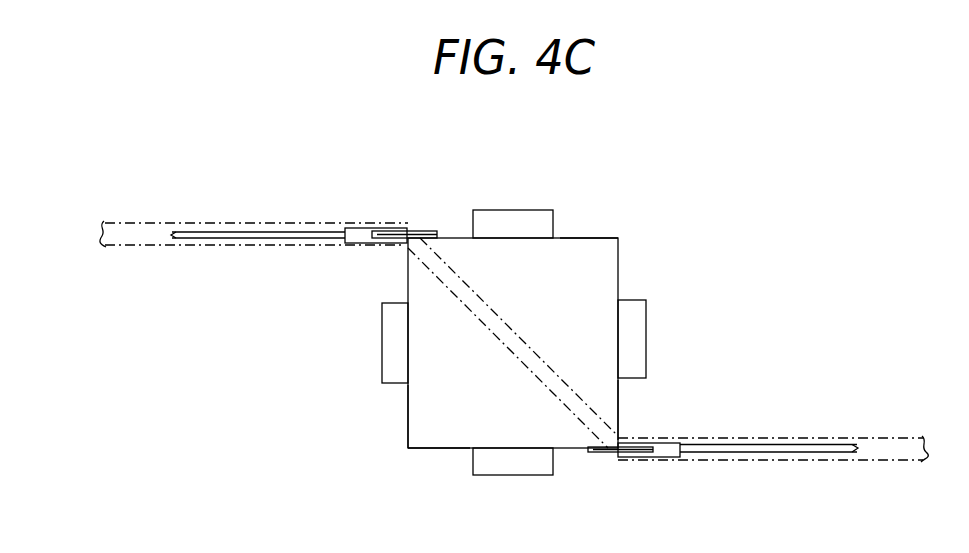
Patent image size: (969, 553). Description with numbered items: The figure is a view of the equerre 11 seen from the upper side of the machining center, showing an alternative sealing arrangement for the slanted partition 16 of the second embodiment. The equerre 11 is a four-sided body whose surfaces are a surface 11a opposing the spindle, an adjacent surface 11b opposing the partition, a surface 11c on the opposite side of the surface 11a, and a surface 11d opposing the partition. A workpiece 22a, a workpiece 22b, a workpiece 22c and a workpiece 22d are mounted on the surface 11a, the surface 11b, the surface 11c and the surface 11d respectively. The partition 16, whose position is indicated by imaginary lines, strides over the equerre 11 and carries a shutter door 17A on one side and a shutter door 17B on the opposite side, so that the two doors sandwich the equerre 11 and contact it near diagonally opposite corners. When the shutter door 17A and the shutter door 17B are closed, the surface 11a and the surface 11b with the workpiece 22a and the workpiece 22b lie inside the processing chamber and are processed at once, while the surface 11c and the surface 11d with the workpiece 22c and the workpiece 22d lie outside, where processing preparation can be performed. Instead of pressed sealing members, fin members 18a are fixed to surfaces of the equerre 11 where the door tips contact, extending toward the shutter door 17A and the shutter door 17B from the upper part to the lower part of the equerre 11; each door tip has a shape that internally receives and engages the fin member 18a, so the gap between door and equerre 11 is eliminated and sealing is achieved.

The equerre 11 is at (580, 238).
The surface of equerre opposing the spindle 11a is at (594, 238).
The surface of equerre opposing the partition 11b is at (618, 412).
The surface of equerre opposite surface 11a 11c is at (437, 449).
The surface of equerre opposing the partition 11d is at (408, 412).
The partition 16 is at (313, 222).
The shutter door 17A is at (313, 245).
The shutter door 17B is at (710, 450).
The fin member 18a is at (412, 231).
The workpiece 22a is at (488, 210).
The workpiece 22b is at (646, 343).
The workpiece 22c is at (540, 462).
The workpiece 22d is at (380, 340).